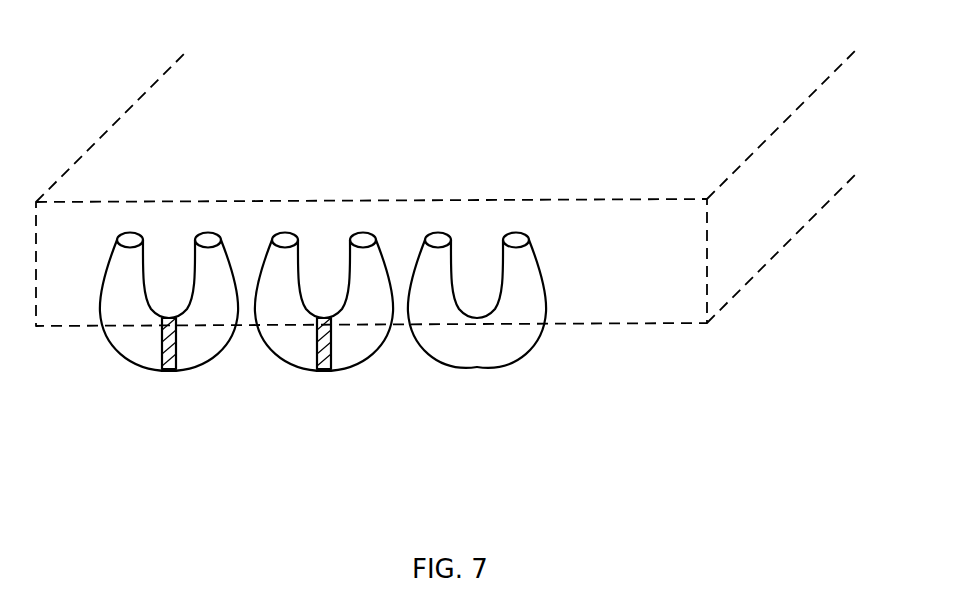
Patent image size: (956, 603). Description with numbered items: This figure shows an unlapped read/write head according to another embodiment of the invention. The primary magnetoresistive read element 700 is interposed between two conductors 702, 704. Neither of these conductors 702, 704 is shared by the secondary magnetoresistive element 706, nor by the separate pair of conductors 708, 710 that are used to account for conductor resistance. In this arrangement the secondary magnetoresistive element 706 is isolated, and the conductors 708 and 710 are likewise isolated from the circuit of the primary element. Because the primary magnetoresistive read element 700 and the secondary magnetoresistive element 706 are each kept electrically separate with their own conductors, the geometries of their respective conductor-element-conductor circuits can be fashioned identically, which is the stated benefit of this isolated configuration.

The primary magnetoresistive read element 700 is at (170, 366).
The conductor 702 is at (102, 343).
The conductor 704 is at (220, 367).
The secondary magnetoresistive element 706 is at (323, 367).
The conductor 708 is at (418, 270).
The conductor 710 is at (505, 272).